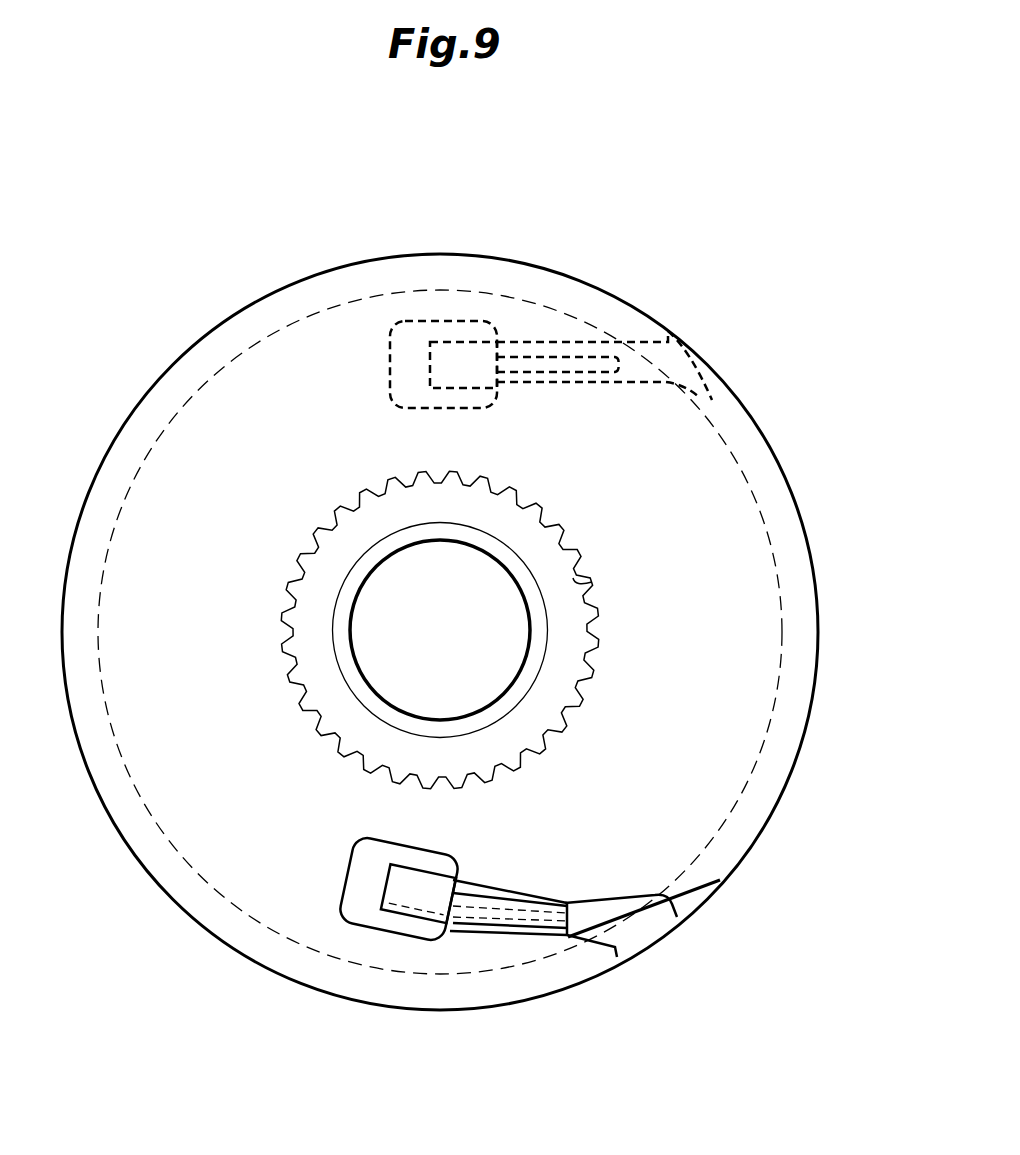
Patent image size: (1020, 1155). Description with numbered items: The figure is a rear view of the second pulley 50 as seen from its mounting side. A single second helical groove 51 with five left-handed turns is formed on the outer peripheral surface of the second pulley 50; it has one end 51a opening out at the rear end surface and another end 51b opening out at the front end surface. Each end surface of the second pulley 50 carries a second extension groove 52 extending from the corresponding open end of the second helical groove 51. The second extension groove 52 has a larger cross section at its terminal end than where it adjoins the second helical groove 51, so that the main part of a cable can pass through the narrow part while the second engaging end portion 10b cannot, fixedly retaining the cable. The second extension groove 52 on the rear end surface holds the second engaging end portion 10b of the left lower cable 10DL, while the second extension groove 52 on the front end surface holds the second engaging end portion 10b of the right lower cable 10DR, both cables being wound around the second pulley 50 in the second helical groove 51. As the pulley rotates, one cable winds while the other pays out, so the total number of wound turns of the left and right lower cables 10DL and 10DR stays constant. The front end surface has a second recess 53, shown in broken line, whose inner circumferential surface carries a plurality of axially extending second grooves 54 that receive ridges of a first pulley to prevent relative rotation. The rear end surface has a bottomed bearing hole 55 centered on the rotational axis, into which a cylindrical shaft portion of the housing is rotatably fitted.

The second pulley 50 is at (689, 178).
The second helical groove 51 is at (308, 313).
The one end of the second helical groove 51a is at (658, 905).
The another end of the second helical groove 51b is at (712, 400).
The second extension groove 52 is at (444, 325).
The second engaging end portion 10b is at (477, 342).
The right lower cable 10DR is at (557, 357).
The left lower cable 10DL is at (498, 922).
The second recess 53 is at (592, 582).
The second grooves 54 is at (576, 557).
The bearing hole 55 is at (500, 692).